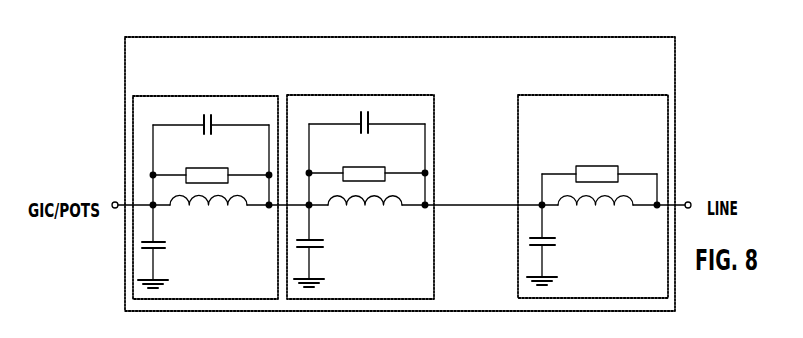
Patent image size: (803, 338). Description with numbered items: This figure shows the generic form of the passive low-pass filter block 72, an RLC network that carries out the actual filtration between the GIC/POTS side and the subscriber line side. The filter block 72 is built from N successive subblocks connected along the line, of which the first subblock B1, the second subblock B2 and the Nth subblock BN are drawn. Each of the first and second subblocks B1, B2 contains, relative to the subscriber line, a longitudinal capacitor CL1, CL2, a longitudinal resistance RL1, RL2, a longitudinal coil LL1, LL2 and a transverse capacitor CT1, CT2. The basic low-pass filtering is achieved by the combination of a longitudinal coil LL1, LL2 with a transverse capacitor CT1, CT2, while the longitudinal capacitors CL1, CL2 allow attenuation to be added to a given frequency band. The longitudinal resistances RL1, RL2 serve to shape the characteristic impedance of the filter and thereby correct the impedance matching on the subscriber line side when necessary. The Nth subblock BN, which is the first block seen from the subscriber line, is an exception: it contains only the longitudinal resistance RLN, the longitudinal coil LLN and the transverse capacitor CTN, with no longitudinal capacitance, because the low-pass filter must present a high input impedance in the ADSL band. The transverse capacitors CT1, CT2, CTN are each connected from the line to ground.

The passive low-pass filter block 72 is at (181, 43).
The first subblock B1 is at (185, 101).
The second subblock B2 is at (313, 100).
The Nth subblock BN is at (566, 98).
The longitudinal capacitor CL1 is at (211, 119).
The longitudinal resistance RL1 is at (211, 164).
The longitudinal coil LL1 is at (208, 212).
The transverse capacitor CT1 is at (168, 246).
The longitudinal capacitor CL2 is at (367, 117).
The longitudinal resistance RL2 is at (367, 162).
The longitudinal coil LL2 is at (365, 213).
The transverse capacitor CT2 is at (326, 246).
The longitudinal resistance RLN is at (599, 163).
The longitudinal coil LLN is at (596, 212).
The transverse capacitor CTN is at (559, 245).